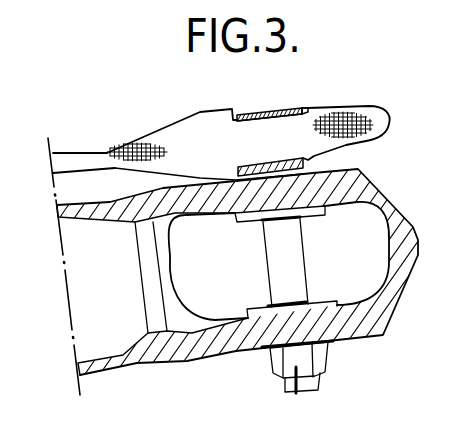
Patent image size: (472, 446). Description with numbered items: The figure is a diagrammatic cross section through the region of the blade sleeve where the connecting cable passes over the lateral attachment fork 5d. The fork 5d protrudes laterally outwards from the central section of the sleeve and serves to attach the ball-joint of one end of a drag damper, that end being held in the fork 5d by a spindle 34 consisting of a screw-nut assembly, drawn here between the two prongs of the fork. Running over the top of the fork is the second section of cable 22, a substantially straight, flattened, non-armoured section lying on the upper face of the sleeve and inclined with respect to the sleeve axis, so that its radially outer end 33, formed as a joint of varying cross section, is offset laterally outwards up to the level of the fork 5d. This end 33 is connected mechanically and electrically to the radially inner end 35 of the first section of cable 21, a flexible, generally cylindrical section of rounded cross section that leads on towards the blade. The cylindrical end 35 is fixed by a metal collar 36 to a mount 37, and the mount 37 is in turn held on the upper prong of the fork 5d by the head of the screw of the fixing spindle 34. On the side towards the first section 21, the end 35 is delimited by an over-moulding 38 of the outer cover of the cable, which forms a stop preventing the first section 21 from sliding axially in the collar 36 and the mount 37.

The first section of cable 21 is at (379, 108).
The second section of cable 22 is at (80, 153).
The radially outer end of the second section 33 is at (177, 152).
The spindle 34 is at (291, 255).
The radially inner end of the first section 35 is at (268, 133).
The metal collar 36 is at (268, 112).
The mount 37 is at (305, 165).
The over-moulding 38 is at (308, 110).
The attachment fork 5d is at (366, 325).